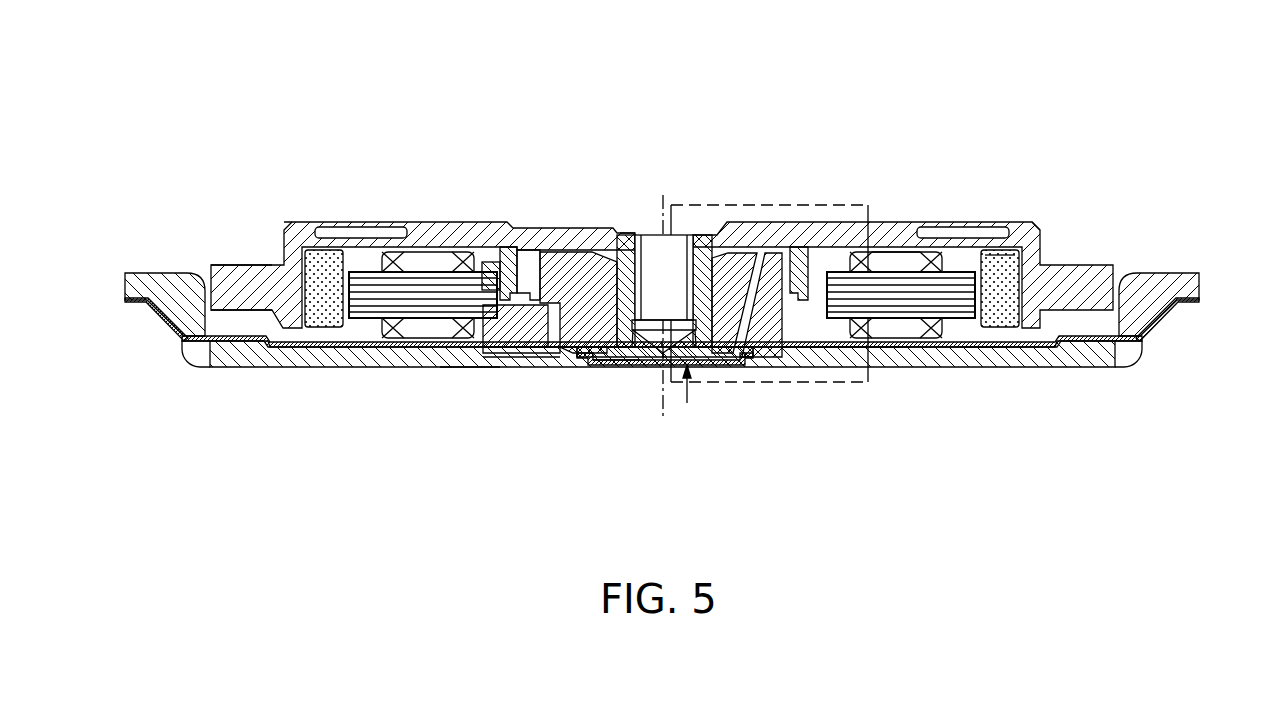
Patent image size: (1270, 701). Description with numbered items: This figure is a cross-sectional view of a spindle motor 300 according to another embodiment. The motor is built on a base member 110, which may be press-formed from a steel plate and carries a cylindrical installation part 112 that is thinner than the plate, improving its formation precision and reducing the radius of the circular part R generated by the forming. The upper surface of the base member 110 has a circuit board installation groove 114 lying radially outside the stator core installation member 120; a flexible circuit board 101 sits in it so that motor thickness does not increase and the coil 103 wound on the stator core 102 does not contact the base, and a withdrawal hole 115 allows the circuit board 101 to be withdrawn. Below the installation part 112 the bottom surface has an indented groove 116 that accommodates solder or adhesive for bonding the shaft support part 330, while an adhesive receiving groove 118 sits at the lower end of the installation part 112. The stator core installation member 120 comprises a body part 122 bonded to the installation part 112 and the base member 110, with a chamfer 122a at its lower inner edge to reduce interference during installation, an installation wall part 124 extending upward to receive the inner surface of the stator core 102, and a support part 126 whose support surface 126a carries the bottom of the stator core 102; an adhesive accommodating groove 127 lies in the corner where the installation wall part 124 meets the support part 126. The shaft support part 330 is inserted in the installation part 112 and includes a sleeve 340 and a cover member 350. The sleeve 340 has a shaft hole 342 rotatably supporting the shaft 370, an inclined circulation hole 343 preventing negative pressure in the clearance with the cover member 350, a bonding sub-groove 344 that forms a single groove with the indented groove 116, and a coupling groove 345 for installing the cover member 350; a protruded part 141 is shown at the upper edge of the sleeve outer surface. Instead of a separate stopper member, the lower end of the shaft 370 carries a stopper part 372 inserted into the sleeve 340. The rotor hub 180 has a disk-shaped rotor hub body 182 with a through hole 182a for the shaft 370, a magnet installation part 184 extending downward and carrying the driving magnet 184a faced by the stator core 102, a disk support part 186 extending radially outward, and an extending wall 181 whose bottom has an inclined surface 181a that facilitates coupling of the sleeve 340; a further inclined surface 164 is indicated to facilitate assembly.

The spindle motor 300 is at (638, 38).
The base member 110 is at (1045, 368).
The installation part 112 is at (747, 360).
The circuit board installation groove 114 is at (850, 362).
The withdrawal hole 115 is at (1130, 348).
The indented groove 116 is at (556, 365).
The adhesive receiving groove 118 is at (793, 367).
The stator core installation member 120 is at (527, 478).
The body part 122 is at (530, 363).
The chamfer 122a is at (562, 365).
The installation wall part 124 is at (497, 363).
The support part 126 is at (470, 363).
The support surface 126a is at (798, 362).
The adhesive accommodating groove 127 is at (492, 262).
The protruded part 141 is at (535, 262).
The inclined surface 164 is at (510, 262).
The rotor hub 180 is at (415, 123).
The extending wall 181 is at (835, 270).
The inclined surface 181a is at (900, 252).
The rotor hub body 182 is at (415, 222).
The through hole 182a is at (640, 230).
The magnet installation part 184 is at (303, 256).
The driving magnet 184a is at (1012, 270).
The disk support part 186 is at (232, 265).
The shaft support part 330 is at (687, 403).
The sleeve 340 is at (578, 262).
The shaft hole 342 is at (703, 245).
The circulation hole 343 is at (740, 255).
The bonding sub-groove 344 is at (753, 360).
The coupling groove 345 is at (700, 360).
The cover member 350 is at (648, 367).
The shaft 370 is at (622, 245).
The stopper part 372 is at (623, 365).
The circuit board 101 is at (982, 347).
The stator core 102 is at (927, 310).
The coil 103 is at (890, 360).
The circular part R is at (773, 365).